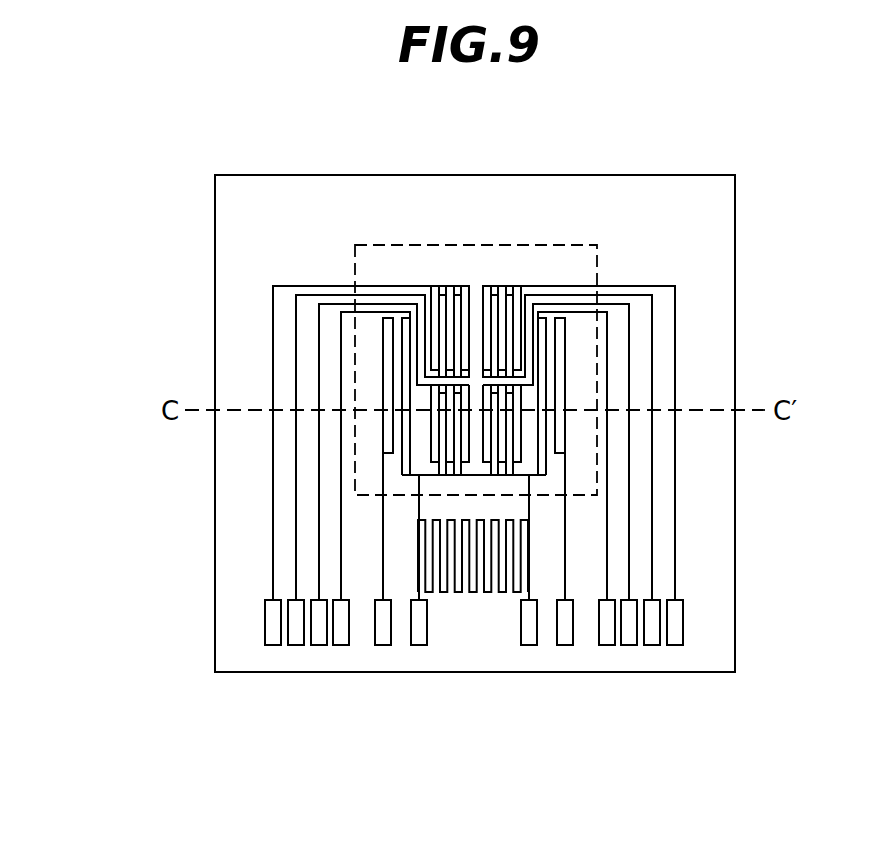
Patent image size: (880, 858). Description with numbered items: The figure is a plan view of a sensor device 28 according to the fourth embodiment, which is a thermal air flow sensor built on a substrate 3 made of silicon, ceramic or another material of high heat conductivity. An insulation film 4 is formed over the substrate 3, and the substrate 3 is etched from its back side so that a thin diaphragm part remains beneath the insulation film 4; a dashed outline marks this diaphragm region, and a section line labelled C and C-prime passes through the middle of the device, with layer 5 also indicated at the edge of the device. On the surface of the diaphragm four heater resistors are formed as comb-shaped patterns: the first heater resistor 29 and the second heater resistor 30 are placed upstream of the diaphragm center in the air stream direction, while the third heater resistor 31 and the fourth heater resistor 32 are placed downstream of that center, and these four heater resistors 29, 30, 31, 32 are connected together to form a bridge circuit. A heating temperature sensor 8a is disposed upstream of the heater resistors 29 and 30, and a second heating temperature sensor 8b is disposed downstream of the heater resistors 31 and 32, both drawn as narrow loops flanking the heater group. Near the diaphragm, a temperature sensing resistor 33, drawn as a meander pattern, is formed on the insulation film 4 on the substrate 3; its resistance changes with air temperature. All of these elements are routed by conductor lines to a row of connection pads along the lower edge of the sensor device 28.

The sensor device 28 is at (215, 195).
The substrate 3 is at (215, 238).
The insulation film 4 is at (233, 281).
The protective layer 5 is at (233, 324).
The first heater resistor 29 is at (459, 293).
The third heater resistor 31 is at (496, 293).
The second heater resistor 30 is at (428, 478).
The fourth heater resistor 32 is at (515, 478).
The heating temperature sensor 8a is at (385, 458).
The heating temperature sensor 8b is at (558, 458).
The temperature sensing resistor 33 is at (470, 596).